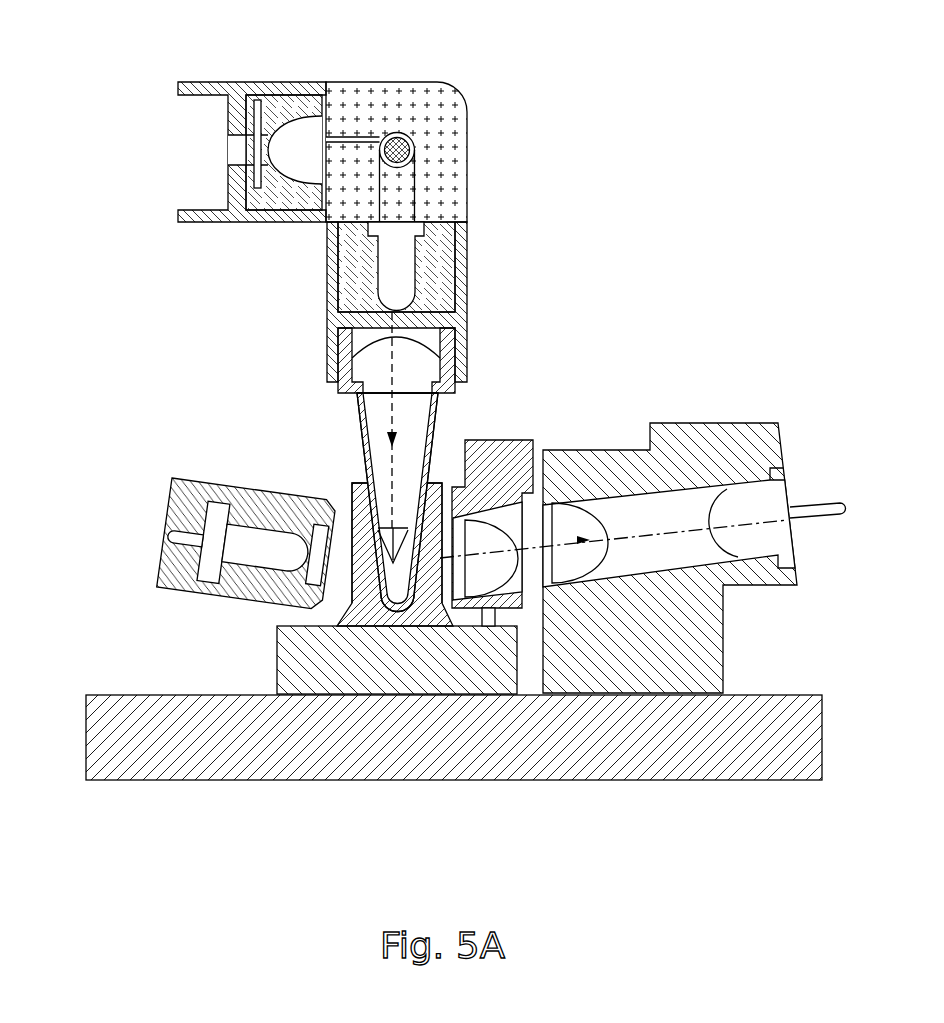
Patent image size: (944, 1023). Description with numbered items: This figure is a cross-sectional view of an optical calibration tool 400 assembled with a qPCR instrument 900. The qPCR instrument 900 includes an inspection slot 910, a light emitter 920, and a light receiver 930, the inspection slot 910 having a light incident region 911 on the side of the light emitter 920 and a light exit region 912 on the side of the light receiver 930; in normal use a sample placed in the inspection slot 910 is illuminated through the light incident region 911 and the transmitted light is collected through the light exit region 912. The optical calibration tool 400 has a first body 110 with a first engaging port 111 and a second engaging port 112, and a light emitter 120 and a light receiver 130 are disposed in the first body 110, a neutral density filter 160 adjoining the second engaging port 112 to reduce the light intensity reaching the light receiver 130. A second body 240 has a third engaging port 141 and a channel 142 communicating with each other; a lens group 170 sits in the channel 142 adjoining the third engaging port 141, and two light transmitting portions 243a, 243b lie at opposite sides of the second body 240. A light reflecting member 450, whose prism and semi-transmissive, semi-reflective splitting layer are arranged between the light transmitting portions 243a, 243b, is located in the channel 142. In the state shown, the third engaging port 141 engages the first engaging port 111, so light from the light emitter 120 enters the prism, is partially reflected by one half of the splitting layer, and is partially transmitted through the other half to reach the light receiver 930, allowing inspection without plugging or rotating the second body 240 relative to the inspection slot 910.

The optical calibration tool 400 is at (515, 70).
The first body 110 is at (440, 173).
The first engaging port 111 is at (475, 338).
The second engaging port 112 is at (213, 75).
The light emitter 120 is at (400, 275).
The light receiver 130 is at (303, 133).
The third engaging port 141 is at (465, 372).
The channel 142 is at (352, 410).
The neutral density filter 160 is at (258, 188).
The lens group 170 is at (372, 370).
The second body 240 is at (437, 408).
The light transmitting portion 243a is at (435, 552).
The light transmitting portion 243b is at (362, 552).
The light reflecting member 450 is at (390, 533).
The qPCR instrument 900 is at (127, 422).
The inspection slot 910 is at (393, 620).
The light incident region 911 is at (367, 593).
The light exit region 912 is at (430, 595).
The light emitter 920 is at (253, 547).
The light receiver 930 is at (760, 530).